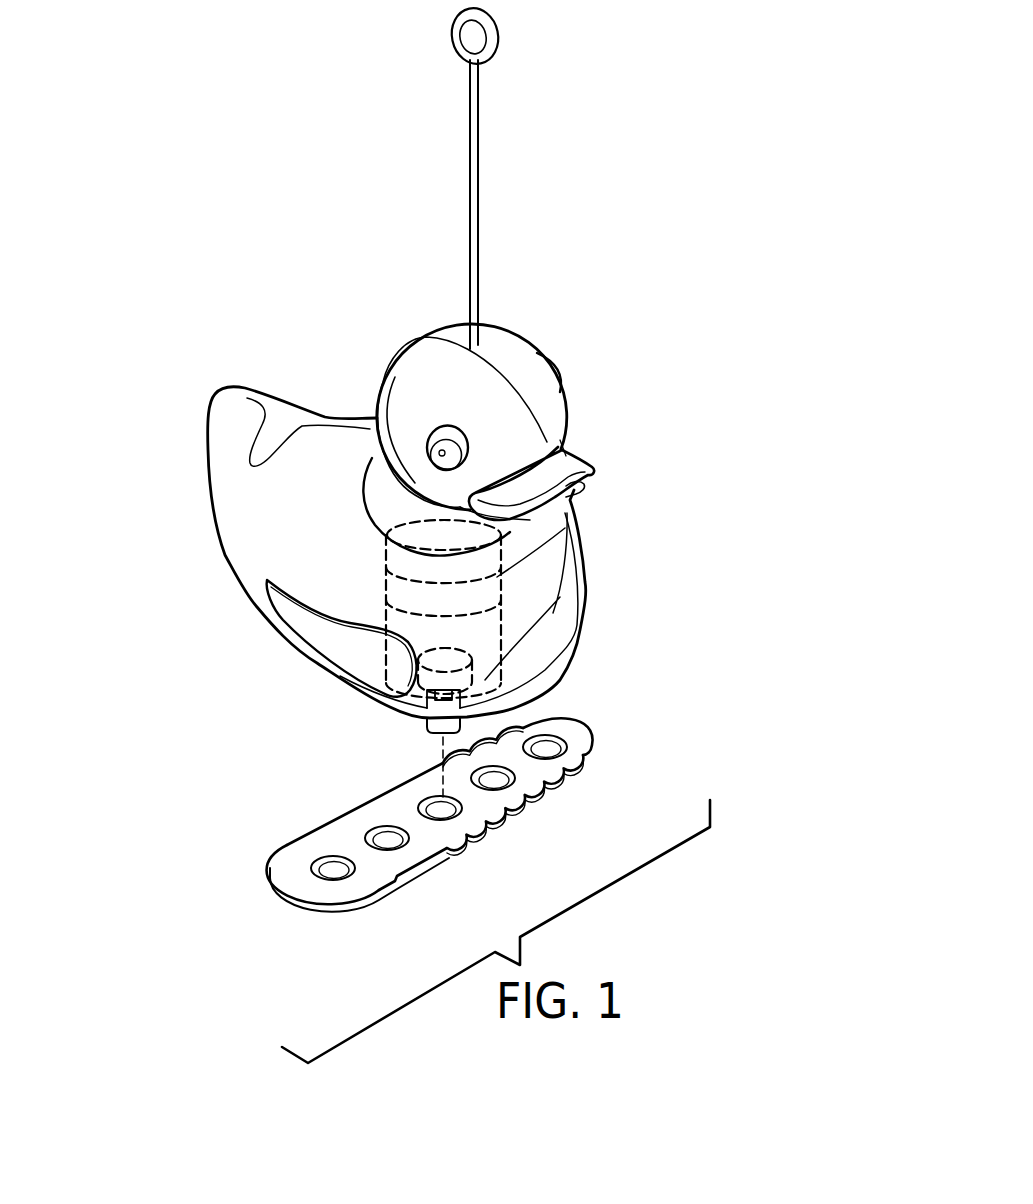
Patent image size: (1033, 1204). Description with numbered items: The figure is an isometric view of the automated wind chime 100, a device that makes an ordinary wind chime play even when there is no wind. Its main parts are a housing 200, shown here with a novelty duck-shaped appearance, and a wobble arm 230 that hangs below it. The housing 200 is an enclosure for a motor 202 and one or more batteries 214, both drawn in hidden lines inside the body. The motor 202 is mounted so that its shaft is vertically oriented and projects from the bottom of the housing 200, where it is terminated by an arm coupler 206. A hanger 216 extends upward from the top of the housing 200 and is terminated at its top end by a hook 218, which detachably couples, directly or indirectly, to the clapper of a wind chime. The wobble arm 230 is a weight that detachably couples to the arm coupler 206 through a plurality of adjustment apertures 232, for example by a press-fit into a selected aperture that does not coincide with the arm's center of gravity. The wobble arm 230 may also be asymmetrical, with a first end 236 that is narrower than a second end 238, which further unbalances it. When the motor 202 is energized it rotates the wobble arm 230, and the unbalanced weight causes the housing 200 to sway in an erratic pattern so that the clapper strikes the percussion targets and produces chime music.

The automated wind chime 100 is at (170, 200).
The housing 200 is at (230, 490).
The motor 202 is at (487, 627).
The arm coupler 206 is at (427, 723).
The one or more batteries 214 is at (515, 524).
The hanger 216 is at (692, 9).
The hook 218 is at (497, 23).
The wobble arm 230 is at (270, 866).
The plurality of adjustment apertures 232 is at (325, 866).
The first end 236 is at (625, 716).
The second end 238 is at (280, 925).